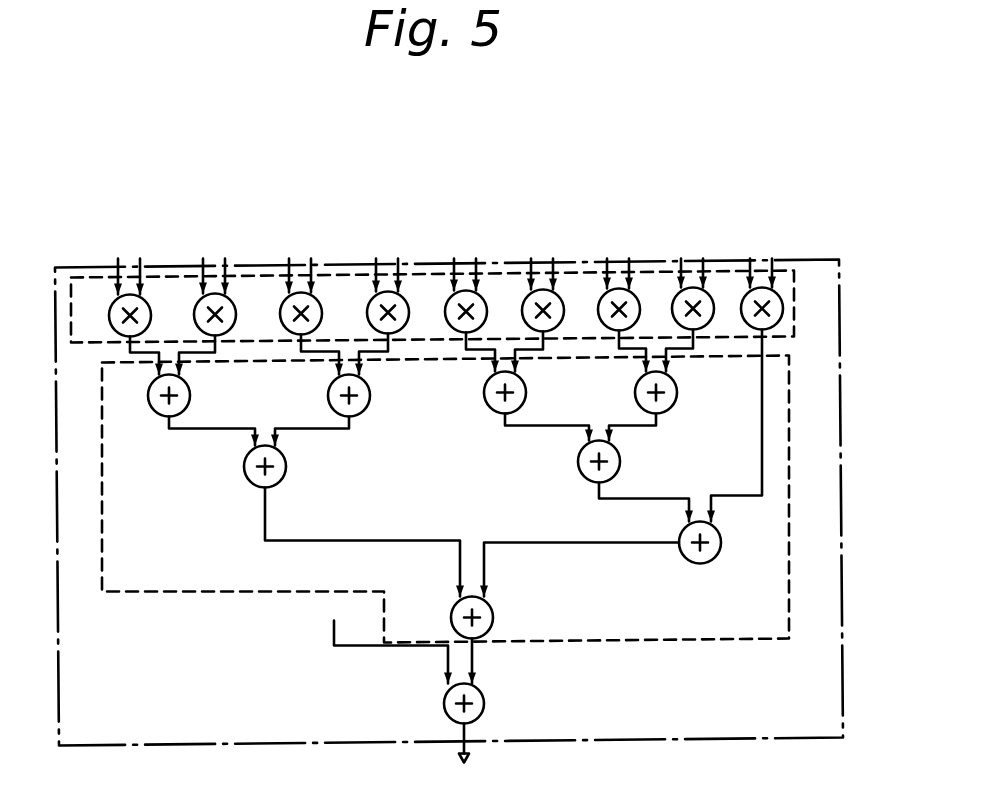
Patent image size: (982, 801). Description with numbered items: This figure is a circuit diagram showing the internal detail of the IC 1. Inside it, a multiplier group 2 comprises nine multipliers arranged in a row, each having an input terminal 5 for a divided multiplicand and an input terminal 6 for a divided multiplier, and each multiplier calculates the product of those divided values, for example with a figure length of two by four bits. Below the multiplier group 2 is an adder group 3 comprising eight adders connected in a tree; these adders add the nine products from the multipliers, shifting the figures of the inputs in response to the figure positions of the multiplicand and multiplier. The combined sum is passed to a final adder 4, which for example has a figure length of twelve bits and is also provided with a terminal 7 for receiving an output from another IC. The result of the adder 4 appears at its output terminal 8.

The IC 1 is at (838, 279).
The multiplier group 2 is at (794, 290).
The adder group 3 is at (788, 405).
The adder 4 is at (484, 703).
The input terminal 5 is at (771, 250).
The input terminal 6 is at (749, 250).
The terminal 7 is at (328, 612).
The output terminal 8 is at (468, 760).